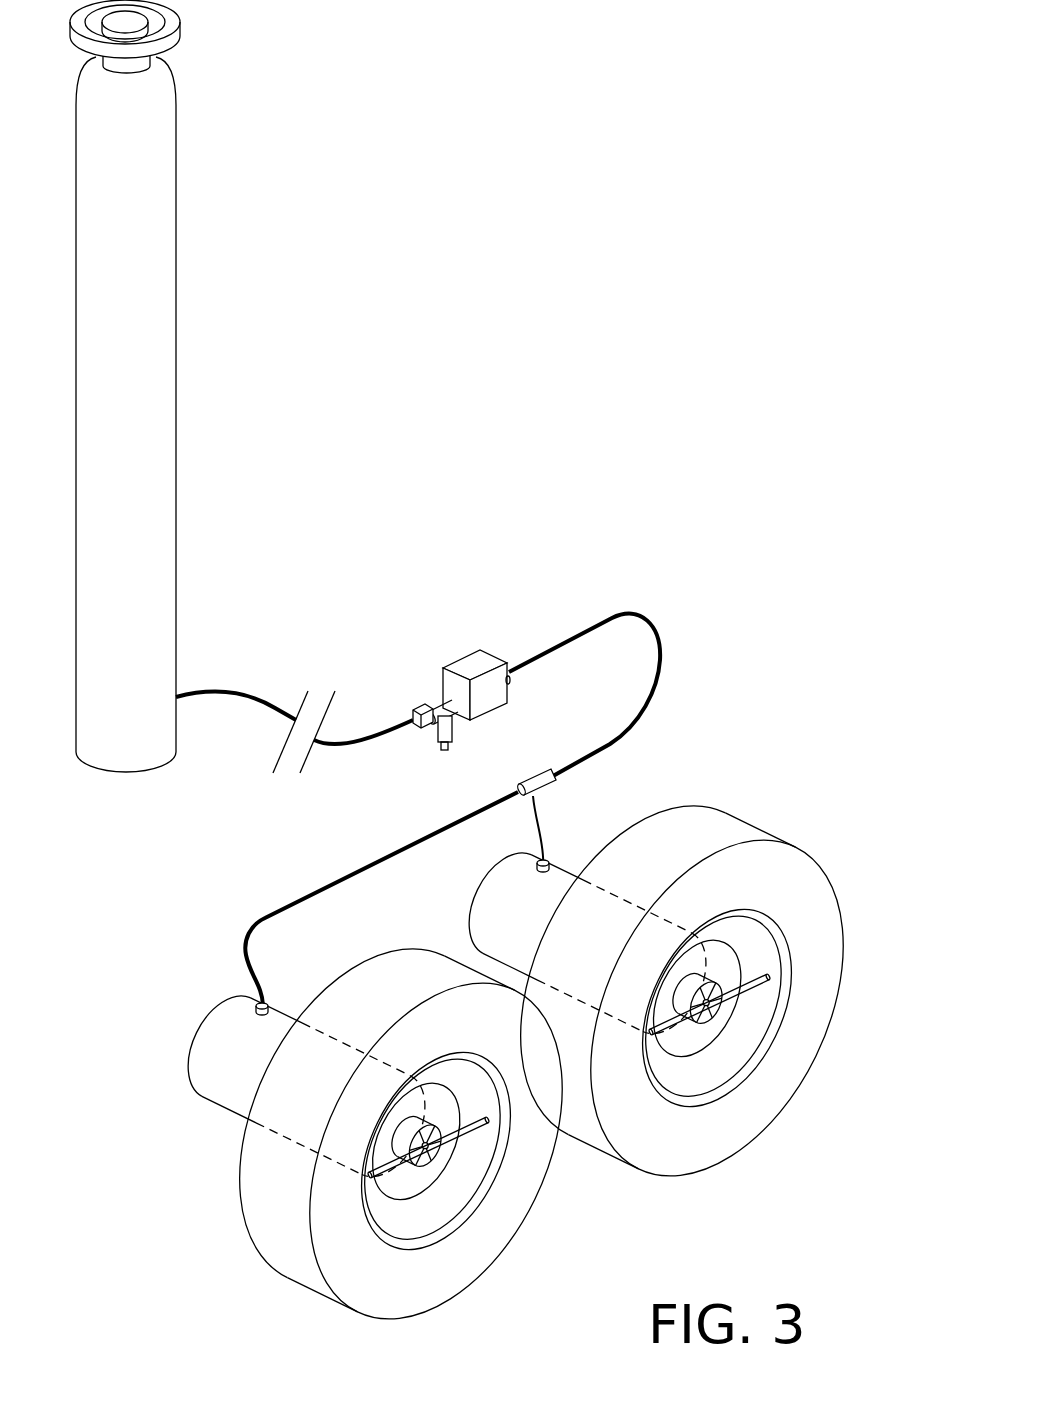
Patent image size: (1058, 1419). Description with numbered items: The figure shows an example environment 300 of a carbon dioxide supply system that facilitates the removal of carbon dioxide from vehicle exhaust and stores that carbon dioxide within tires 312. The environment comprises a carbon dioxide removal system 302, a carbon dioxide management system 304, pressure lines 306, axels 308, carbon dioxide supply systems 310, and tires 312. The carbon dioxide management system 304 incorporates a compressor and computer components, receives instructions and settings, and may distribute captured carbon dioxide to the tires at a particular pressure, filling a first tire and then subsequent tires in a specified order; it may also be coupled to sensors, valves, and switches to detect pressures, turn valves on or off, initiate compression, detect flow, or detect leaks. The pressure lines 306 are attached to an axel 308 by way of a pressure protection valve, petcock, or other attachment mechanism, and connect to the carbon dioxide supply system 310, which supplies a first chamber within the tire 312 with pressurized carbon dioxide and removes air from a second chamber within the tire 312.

The example environment 300 is at (750, 148).
The carbon dioxide removal system 302 is at (168, 375).
The carbon dioxide management system 304 is at (467, 662).
The pressure lines 306 is at (651, 623).
The axel 308 is at (287, 1008).
The carbon dioxide supply system 310 is at (432, 1150).
The tire 312 is at (446, 1281).